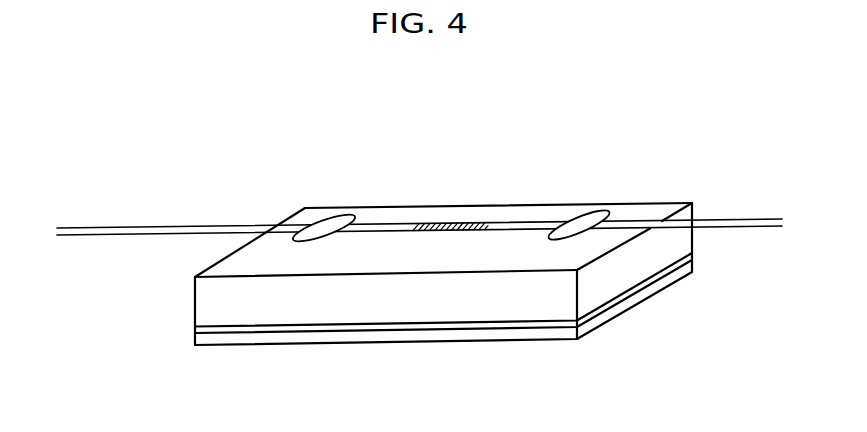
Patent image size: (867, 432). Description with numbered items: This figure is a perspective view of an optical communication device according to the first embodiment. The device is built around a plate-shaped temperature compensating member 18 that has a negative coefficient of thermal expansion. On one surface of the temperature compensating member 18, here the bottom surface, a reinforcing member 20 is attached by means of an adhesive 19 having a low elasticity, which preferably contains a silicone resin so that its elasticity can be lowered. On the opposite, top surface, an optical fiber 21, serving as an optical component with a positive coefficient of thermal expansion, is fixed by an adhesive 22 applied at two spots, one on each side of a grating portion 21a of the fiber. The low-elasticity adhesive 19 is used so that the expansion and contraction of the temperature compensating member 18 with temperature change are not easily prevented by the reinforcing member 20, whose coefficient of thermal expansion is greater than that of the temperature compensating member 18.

The temperature compensating member 18 is at (205, 297).
The adhesive 19 is at (498, 325).
The reinforcing member 20 is at (350, 340).
The optical fiber 21 is at (117, 227).
The grating portion 21a is at (490, 221).
The adhesive 22 is at (345, 215).